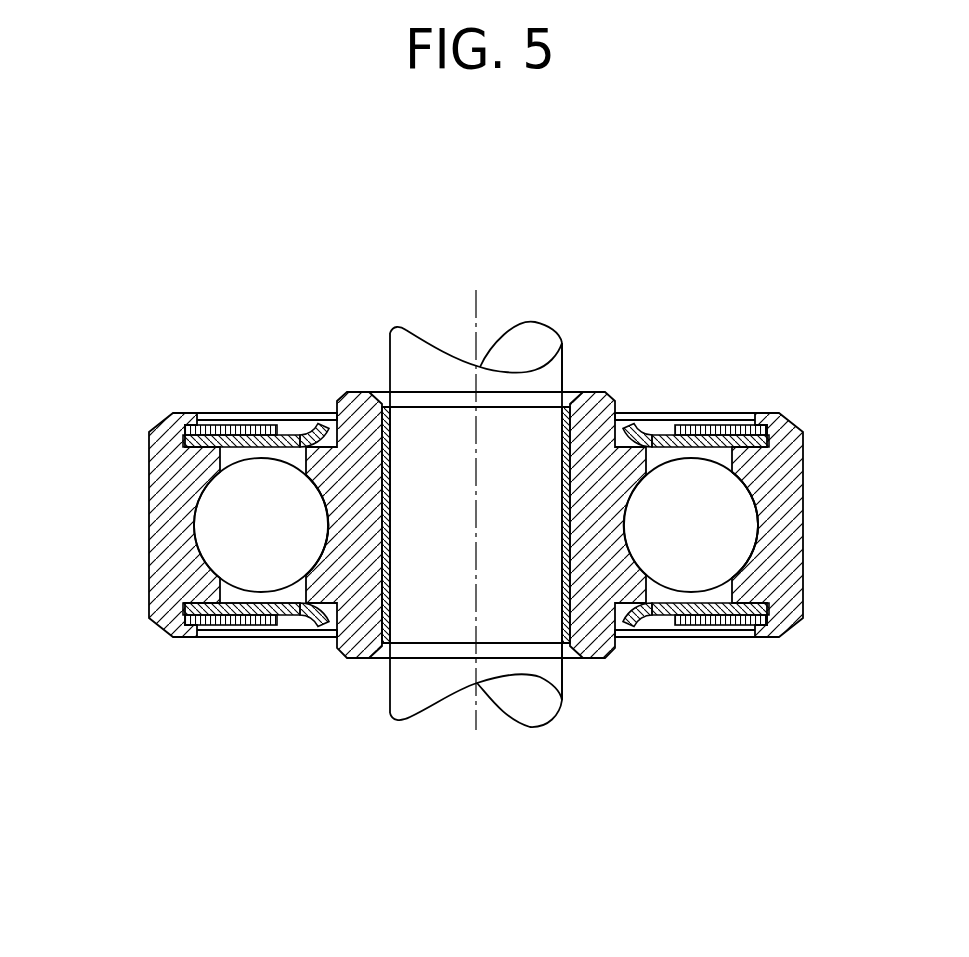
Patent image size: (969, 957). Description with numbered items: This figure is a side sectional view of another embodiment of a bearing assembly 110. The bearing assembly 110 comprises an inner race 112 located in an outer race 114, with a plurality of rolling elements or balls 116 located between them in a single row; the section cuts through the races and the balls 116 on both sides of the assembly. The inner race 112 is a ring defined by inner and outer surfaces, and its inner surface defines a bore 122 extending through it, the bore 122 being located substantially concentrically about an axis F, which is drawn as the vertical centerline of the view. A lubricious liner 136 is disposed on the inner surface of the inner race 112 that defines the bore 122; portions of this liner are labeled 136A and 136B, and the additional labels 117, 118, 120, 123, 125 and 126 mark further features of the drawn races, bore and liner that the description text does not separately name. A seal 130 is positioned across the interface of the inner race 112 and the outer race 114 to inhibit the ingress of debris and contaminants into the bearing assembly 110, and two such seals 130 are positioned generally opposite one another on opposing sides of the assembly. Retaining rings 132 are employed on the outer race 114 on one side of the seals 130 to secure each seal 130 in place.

The bearing assembly 110 is at (482, 256).
The inner race 112 is at (607, 392).
The outer race 114 is at (800, 427).
The balls 116 is at (211, 508).
The inner raceway 117 is at (322, 517).
The sleeve end portion 118 is at (545, 600).
The seal 120 is at (286, 603).
The bore 122 is at (567, 652).
The flange 123 is at (508, 340).
The sleeve shoulder 125 is at (563, 366).
The outer raceway 126 is at (743, 530).
The seal 130 is at (642, 426).
The retaining rings 132 is at (712, 430).
The lubricious liner 136 is at (562, 480).
The first sleeve portion 136A is at (370, 582).
The second sleeve portion 136B is at (406, 425).
The axis F is at (472, 620).